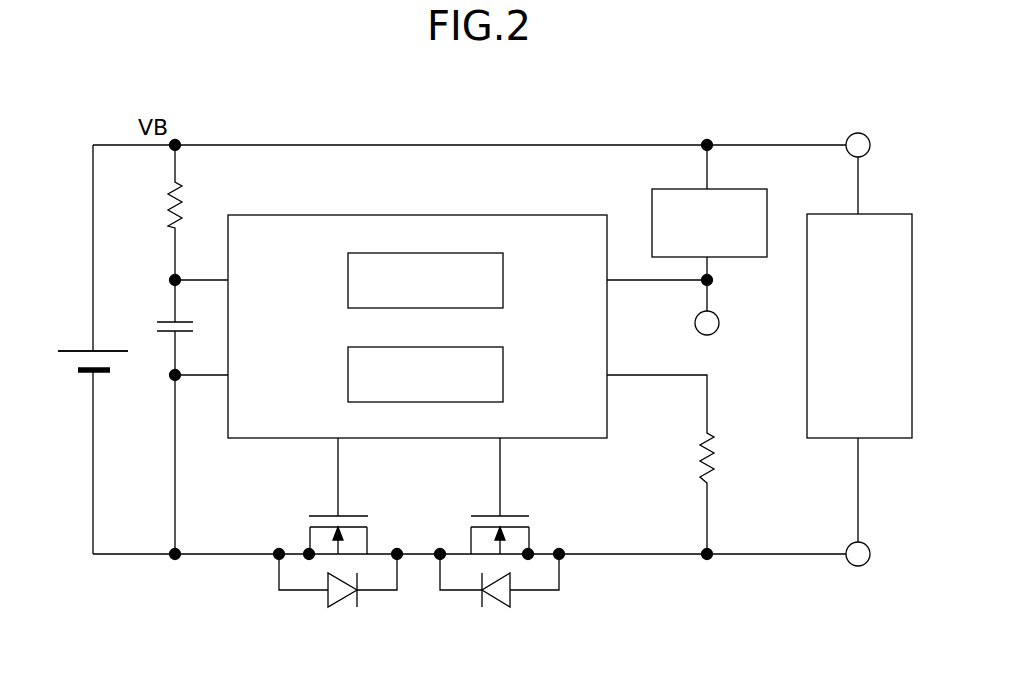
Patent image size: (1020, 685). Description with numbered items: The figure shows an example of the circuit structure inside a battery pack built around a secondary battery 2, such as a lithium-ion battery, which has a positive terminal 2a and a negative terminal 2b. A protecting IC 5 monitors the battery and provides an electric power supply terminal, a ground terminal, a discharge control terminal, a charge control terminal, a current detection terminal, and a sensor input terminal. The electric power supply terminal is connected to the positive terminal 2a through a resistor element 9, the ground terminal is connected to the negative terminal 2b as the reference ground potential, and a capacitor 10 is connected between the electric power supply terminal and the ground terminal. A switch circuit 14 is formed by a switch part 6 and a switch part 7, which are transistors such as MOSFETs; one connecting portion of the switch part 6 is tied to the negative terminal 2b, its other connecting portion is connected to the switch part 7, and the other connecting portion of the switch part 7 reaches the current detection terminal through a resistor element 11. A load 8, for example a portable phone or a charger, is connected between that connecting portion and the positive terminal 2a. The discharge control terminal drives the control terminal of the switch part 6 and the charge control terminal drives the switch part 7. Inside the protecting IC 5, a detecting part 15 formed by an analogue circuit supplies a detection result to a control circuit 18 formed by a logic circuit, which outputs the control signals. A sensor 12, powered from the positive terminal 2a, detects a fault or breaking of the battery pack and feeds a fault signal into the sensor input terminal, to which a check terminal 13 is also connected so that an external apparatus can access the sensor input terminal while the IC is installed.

The secondary battery 2 is at (116, 350).
The positive terminal 2a is at (93, 348).
The negative terminal 2b is at (88, 373).
The protecting integrated circuit 5 is at (417, 312).
The switch part 6 is at (370, 540).
The switch part 7 is at (499, 522).
The load 8 is at (874, 213).
The resistor element 9 is at (180, 194).
The capacitor 10 is at (164, 320).
The resistor element 11 is at (712, 446).
The sensor 12 is at (728, 188).
The check terminal 13 is at (718, 316).
The switch circuit 14 is at (419, 522).
The detecting part 15 is at (458, 252).
The control circuit 18 is at (458, 345).